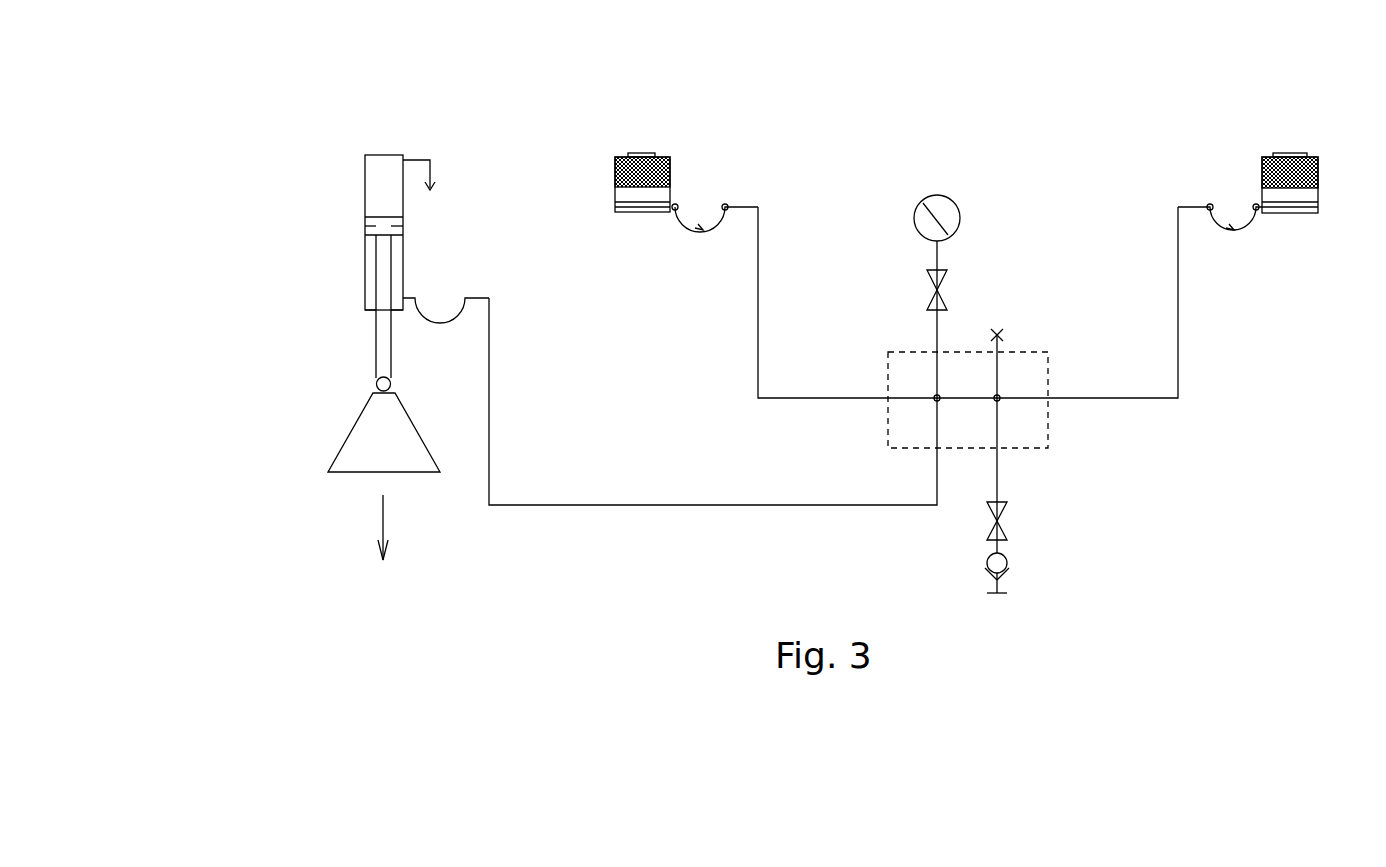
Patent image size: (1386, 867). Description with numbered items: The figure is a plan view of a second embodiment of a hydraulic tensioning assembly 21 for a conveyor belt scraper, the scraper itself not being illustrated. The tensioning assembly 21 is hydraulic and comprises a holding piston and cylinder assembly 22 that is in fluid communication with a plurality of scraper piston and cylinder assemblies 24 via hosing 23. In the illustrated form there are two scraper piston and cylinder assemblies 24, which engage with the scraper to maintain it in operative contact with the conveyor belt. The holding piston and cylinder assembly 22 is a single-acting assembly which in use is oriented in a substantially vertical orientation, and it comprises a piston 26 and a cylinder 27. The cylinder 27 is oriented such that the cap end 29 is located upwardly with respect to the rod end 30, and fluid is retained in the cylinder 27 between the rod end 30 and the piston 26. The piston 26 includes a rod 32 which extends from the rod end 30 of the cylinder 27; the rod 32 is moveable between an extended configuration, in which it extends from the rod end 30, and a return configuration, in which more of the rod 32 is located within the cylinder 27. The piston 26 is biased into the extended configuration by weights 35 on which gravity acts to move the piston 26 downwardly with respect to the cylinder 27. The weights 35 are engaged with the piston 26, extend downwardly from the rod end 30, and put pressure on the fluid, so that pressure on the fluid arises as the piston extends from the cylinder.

The tensioning assembly 21 is at (303, 152).
The holding piston and cylinder assembly 22 is at (348, 325).
The hosing 23 is at (622, 517).
The scraper piston and cylinder assemblies 24 is at (665, 158).
The piston 26 is at (377, 290).
The cylinder 27 is at (360, 310).
The cap end 29 is at (390, 163).
The rod end 30 is at (410, 307).
The rod 32 is at (389, 243).
The weights 35 is at (367, 430).